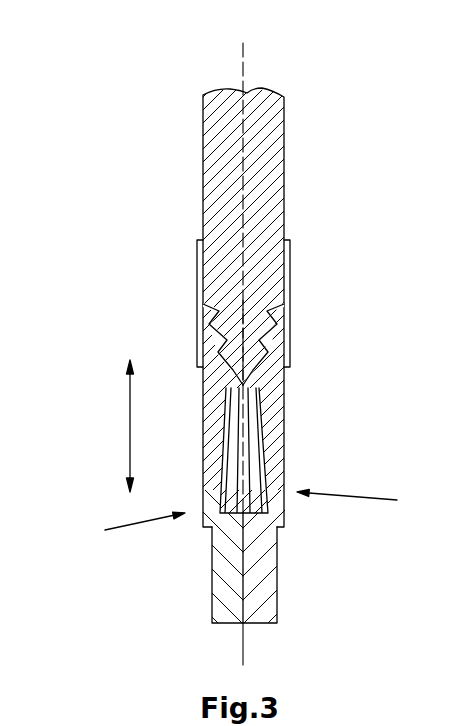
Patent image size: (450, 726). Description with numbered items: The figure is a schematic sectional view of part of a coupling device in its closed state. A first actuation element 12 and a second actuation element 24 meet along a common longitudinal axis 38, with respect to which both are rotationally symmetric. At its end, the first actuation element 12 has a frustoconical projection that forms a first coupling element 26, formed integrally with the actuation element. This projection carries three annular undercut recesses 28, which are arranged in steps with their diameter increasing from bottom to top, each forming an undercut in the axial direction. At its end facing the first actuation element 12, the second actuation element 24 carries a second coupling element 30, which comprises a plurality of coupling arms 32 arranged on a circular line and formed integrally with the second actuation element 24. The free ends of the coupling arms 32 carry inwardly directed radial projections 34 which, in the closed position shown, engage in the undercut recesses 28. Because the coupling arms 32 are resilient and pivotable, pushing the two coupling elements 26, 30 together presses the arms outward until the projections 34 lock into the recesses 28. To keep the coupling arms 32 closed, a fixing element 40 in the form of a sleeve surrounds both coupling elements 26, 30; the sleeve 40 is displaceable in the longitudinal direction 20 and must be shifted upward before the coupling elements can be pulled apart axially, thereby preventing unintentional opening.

The first actuation element 12 is at (217, 135).
The longitudinal direction 20 is at (130, 418).
The second actuation element 24 is at (223, 578).
The first coupling element 26 is at (240, 305).
The undercut recesses 28 is at (257, 367).
The second coupling element 30 is at (251, 517).
The coupling arms 32 is at (213, 422).
The radial projections 34 is at (218, 357).
The longitudinal axis 38 is at (240, 60).
The fixing element 40 is at (290, 268).